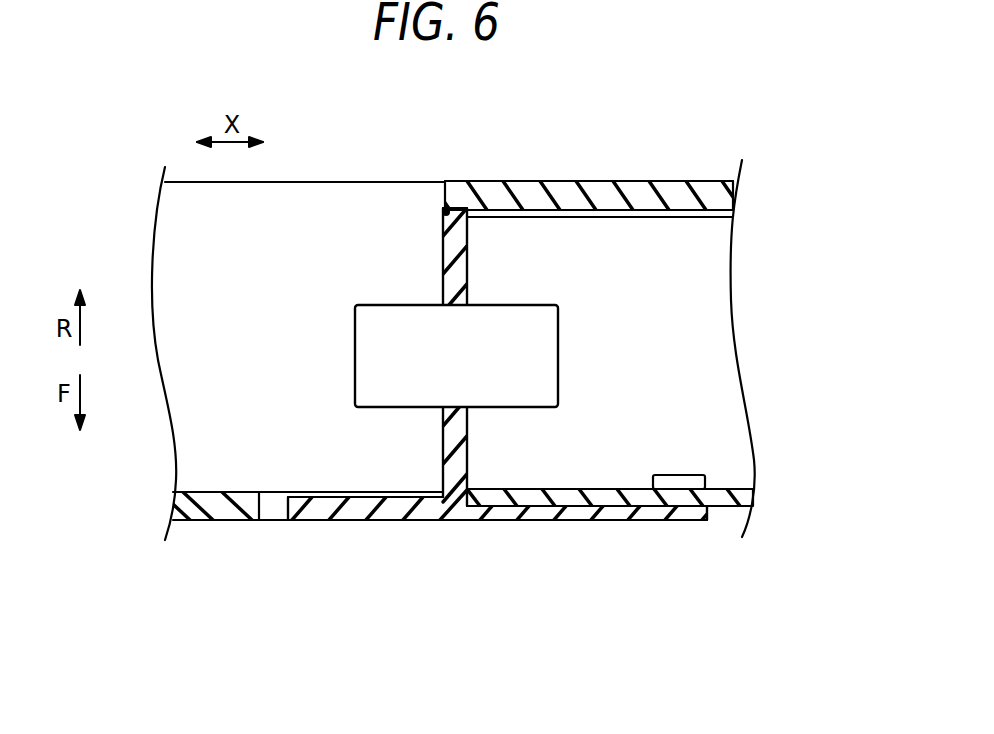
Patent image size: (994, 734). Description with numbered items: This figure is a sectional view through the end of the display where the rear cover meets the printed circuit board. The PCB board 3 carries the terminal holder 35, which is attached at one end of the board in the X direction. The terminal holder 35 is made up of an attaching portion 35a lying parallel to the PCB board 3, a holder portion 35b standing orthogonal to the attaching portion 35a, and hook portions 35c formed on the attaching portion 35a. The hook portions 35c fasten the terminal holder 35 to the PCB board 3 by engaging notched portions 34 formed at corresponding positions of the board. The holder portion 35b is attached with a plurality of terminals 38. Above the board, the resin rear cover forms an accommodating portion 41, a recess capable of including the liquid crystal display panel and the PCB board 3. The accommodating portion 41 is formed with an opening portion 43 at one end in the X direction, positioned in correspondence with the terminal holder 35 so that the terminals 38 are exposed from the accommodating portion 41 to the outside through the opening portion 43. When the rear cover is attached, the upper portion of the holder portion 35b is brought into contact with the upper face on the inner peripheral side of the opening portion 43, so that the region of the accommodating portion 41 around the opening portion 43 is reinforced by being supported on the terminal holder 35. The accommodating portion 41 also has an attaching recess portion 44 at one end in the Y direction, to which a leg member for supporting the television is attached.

The PCB board 3 is at (742, 473).
The notched portion 34 is at (653, 481).
The terminal holder 35 is at (428, 460).
The attaching portion 35a is at (433, 523).
The holder portion 35b is at (440, 273).
The hook portion 35c is at (688, 476).
The terminal 38 is at (540, 333).
The accommodating portion 41 is at (545, 180).
The opening portion 43 is at (443, 211).
The attaching recess portion 44 is at (684, 160).